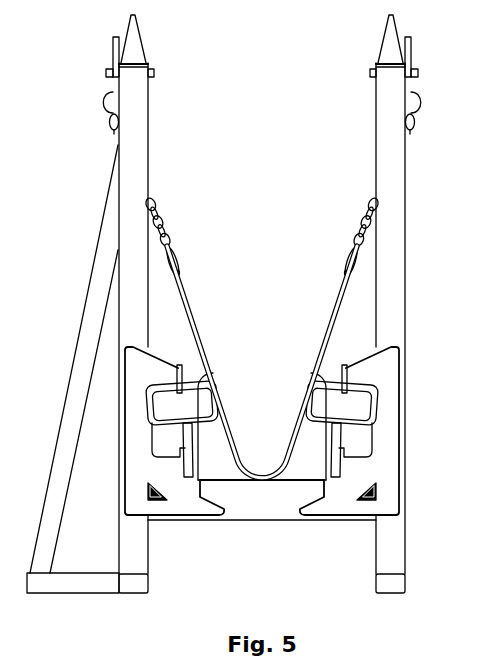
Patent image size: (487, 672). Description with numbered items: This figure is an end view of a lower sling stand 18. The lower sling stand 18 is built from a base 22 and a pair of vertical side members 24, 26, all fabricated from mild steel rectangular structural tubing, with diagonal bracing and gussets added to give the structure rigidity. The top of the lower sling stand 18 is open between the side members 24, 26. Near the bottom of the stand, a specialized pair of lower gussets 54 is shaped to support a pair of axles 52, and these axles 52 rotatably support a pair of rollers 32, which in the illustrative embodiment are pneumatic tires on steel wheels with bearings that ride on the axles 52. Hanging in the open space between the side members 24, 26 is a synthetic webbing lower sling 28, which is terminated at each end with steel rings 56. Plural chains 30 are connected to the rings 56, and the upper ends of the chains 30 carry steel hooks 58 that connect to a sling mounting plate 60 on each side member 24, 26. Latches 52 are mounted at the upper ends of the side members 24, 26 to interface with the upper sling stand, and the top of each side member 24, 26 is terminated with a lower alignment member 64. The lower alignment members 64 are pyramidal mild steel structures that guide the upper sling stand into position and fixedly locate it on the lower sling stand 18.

The lower sling stand 18 is at (467, 299).
The base 22 is at (377, 594).
The side member 24 is at (376, 125).
The side member 26 is at (149, 145).
The lower sling 28 is at (320, 343).
The chains 30 is at (364, 208).
The rollers 32 is at (313, 372).
The axles 52 is at (114, 50).
The lower gussets 54 is at (311, 482).
The steel rings 56 is at (346, 258).
The steel hooks 58 is at (108, 114).
The sling mounting plate 60 is at (113, 95).
The lower alignment member 64 is at (385, 35).